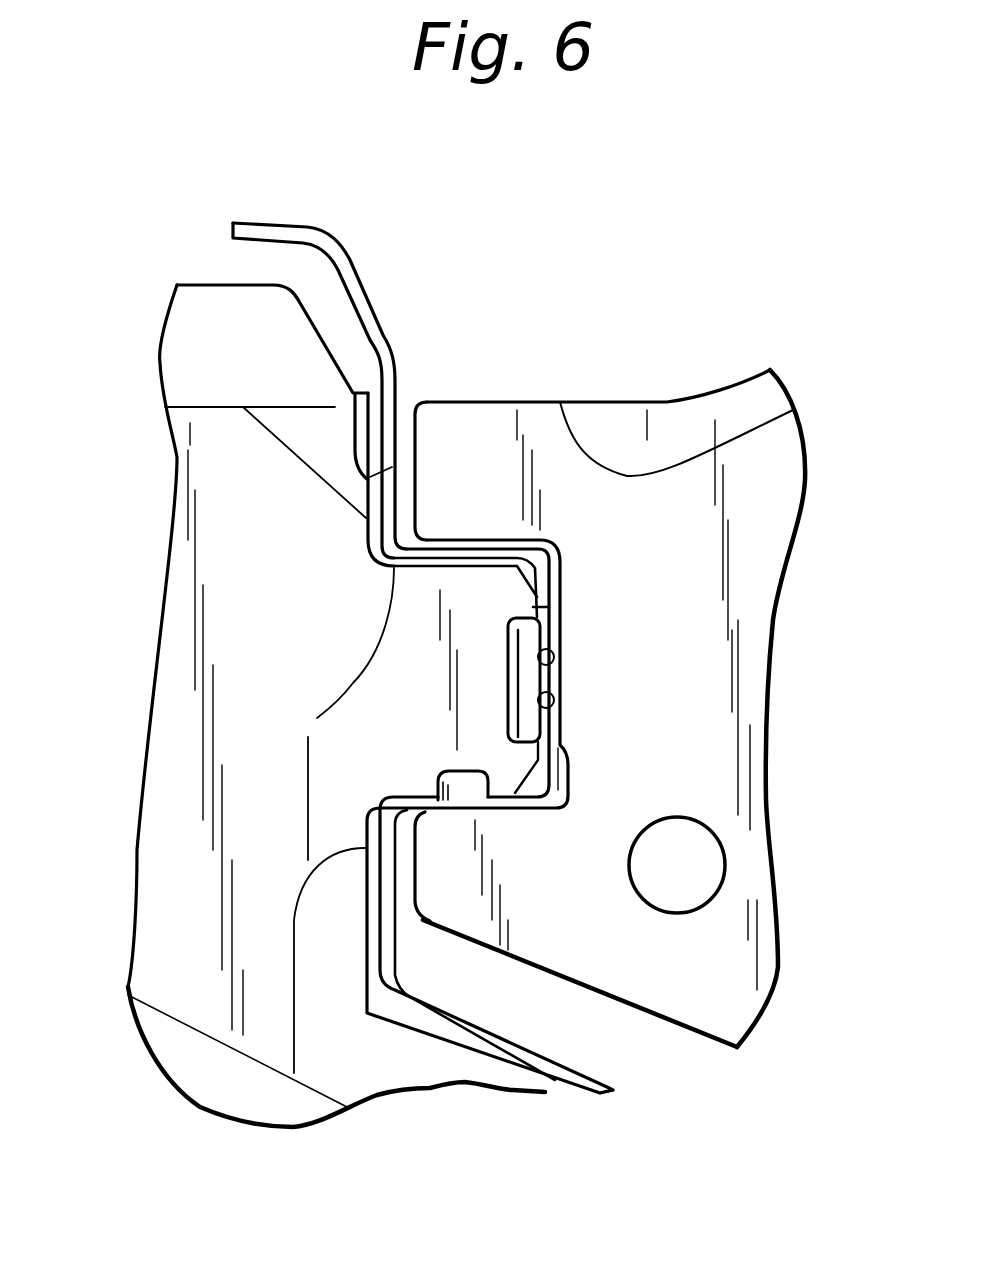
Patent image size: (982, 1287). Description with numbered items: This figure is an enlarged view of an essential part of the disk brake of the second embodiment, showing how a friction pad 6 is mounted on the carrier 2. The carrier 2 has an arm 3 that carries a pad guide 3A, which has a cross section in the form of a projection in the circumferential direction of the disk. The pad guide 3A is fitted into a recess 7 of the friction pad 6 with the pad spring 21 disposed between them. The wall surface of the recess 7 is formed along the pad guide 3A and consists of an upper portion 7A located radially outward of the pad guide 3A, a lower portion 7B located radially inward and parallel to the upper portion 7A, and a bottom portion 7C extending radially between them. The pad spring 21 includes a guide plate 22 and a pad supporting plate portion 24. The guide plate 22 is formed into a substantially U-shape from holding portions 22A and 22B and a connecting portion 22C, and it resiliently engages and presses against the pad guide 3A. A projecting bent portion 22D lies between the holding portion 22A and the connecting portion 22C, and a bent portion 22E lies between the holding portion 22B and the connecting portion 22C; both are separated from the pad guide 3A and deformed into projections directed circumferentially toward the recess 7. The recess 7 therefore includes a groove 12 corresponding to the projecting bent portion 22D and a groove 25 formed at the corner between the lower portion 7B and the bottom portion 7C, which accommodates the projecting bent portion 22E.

The carrier 2 is at (174, 280).
The arm 3 is at (162, 965).
The pad guide 3A is at (437, 687).
The friction pad 6 is at (727, 1000).
The recess 7 is at (557, 692).
The upper portion 7A is at (367, 545).
The lower portion 7B is at (437, 778).
The bottom portion 7C is at (557, 652).
The groove 12 is at (565, 592).
The pad spring 21 is at (316, 213).
The guide plate 22 is at (493, 562).
The holding portion 22A is at (440, 572).
The holding portion 22B is at (507, 813).
The connecting portion 22C is at (565, 600).
The projecting bent portion 22D is at (550, 648).
The bent portion 22E is at (560, 797).
The pad supporting plate portion 24 is at (568, 1087).
The groove 25 is at (562, 773).